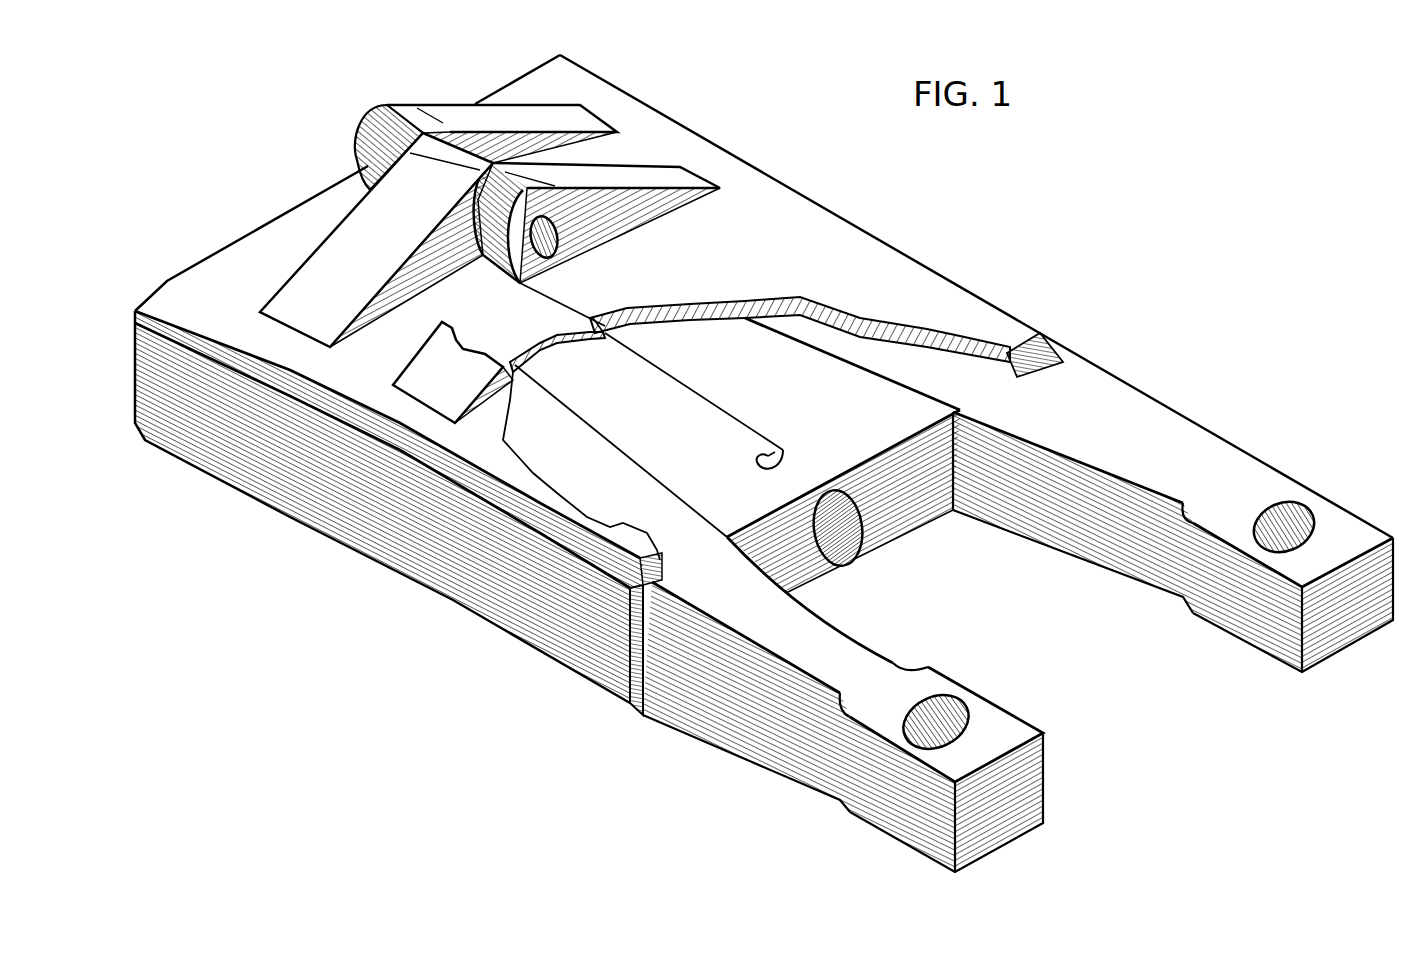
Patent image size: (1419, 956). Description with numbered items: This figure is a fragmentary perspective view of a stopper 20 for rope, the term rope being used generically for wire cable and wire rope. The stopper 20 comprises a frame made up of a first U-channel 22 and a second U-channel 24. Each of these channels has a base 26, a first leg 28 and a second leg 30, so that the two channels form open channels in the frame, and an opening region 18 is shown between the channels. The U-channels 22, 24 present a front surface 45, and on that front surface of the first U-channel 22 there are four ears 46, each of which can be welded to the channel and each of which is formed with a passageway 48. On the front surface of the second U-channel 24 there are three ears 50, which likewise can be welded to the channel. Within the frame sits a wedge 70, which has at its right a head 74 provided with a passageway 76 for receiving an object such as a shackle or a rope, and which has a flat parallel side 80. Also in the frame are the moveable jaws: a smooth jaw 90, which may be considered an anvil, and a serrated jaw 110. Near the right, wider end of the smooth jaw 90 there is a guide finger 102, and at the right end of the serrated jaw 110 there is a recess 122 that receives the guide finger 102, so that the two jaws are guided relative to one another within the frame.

The stopper 20 is at (764, 379).
The first U-channel 22 is at (922, 252).
The second U-channel 24 is at (370, 570).
The base 26 is at (633, 674).
The first leg 28 is at (627, 540).
The second leg 30 is at (833, 567).
The pocket between arms 18 is at (907, 550).
The front surface 45 is at (200, 273).
The ears 46 is at (550, 117).
The passageway 48 is at (543, 207).
The ears 50 is at (400, 258).
The wedge 70 is at (715, 610).
The head 74 is at (1007, 727).
The passageway 76 is at (940, 692).
The flat parallel side 80 is at (1093, 413).
The smooth jaw 90 is at (686, 380).
The guide finger 102 is at (772, 462).
The serrated jaw 110 is at (583, 425).
The recess 122 is at (757, 458).